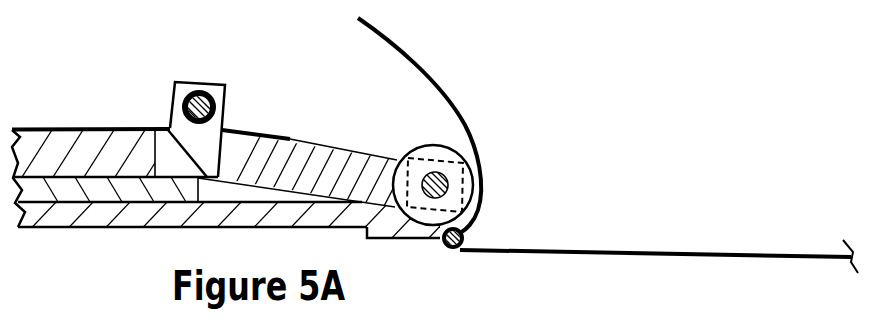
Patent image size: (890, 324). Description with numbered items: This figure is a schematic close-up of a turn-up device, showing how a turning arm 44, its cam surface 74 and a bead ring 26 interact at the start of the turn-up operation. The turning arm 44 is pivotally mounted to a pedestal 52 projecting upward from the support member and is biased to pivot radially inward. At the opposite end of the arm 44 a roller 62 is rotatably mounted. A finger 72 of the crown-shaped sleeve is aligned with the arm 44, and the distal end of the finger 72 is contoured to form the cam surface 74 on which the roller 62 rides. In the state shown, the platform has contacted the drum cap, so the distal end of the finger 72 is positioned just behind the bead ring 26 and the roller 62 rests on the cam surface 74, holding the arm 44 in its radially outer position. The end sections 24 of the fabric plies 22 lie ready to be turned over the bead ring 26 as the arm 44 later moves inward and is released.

The fabric plies 22 is at (737, 257).
The end sections 24 is at (422, 58).
The bead ring 26 is at (462, 237).
The turning arm 44 is at (323, 163).
The pedestal 52 is at (43, 129).
The roller 62 is at (440, 147).
The finger 72 is at (167, 217).
The cam surface 74 is at (363, 227).